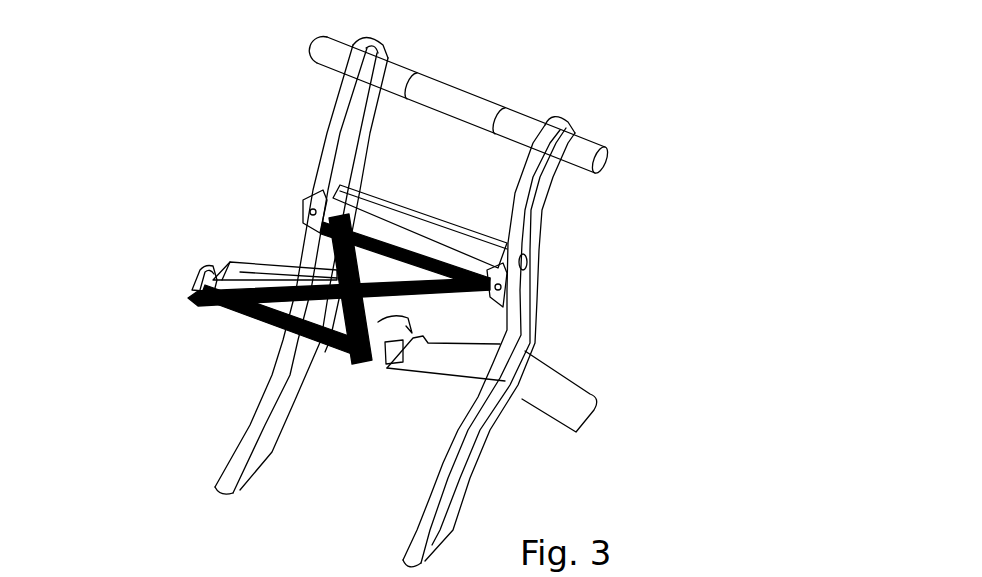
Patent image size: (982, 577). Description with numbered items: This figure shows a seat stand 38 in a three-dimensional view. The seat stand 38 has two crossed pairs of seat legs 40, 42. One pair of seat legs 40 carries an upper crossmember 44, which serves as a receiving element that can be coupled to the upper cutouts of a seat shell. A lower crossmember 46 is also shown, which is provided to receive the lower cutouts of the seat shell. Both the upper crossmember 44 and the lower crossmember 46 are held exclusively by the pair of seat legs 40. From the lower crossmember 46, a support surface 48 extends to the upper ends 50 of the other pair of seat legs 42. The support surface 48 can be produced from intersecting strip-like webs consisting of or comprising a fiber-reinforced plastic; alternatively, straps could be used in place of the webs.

The seat stand 38 is at (572, 62).
The seat legs 40 is at (540, 221).
The seat legs 42 is at (433, 363).
The upper crossmember 44 is at (393, 72).
The lower crossmember 46 is at (400, 213).
The support surface 48 is at (307, 248).
The upper ends 50 is at (180, 275).